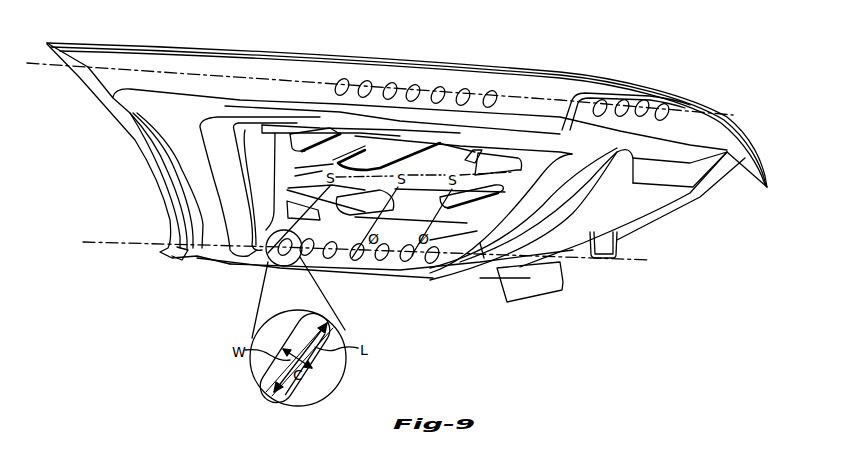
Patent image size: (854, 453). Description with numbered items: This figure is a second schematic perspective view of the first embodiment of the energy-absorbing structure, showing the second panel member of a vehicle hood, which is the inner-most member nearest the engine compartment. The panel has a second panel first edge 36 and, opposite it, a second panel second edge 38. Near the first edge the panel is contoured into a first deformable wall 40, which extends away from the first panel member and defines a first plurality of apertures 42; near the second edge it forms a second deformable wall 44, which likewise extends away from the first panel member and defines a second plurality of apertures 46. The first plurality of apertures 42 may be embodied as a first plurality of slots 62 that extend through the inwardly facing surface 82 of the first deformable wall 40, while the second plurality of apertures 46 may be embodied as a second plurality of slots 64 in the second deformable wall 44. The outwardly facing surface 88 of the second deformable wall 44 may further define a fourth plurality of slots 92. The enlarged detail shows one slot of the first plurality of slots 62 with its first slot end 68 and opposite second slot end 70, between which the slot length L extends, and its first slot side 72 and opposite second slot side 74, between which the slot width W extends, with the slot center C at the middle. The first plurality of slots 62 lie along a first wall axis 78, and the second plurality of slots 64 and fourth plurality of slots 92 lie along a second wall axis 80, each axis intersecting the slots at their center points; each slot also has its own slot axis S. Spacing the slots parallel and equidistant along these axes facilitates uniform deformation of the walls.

The second panel first edge 36 is at (477, 273).
The second panel second edge 38 is at (397, 57).
The first deformable wall 40 is at (266, 263).
The first plurality of apertures 42 is at (358, 283).
The second deformable wall 44 is at (279, 78).
The second plurality of apertures 46 is at (427, 71).
The first plurality of slots 62 is at (390, 258).
The second plurality of slots 64 is at (447, 85).
The first slot end 68 is at (325, 313).
The second slot end 70 is at (270, 398).
The first slot side 72 is at (282, 338).
The second slot side 74 is at (310, 378).
The first wall axis 78 is at (632, 262).
The second wall axis 80 is at (723, 112).
The inwardly facing surface 82 is at (445, 257).
The outwardly facing surface 88 is at (590, 100).
The fourth plurality of slots 92 is at (645, 117).